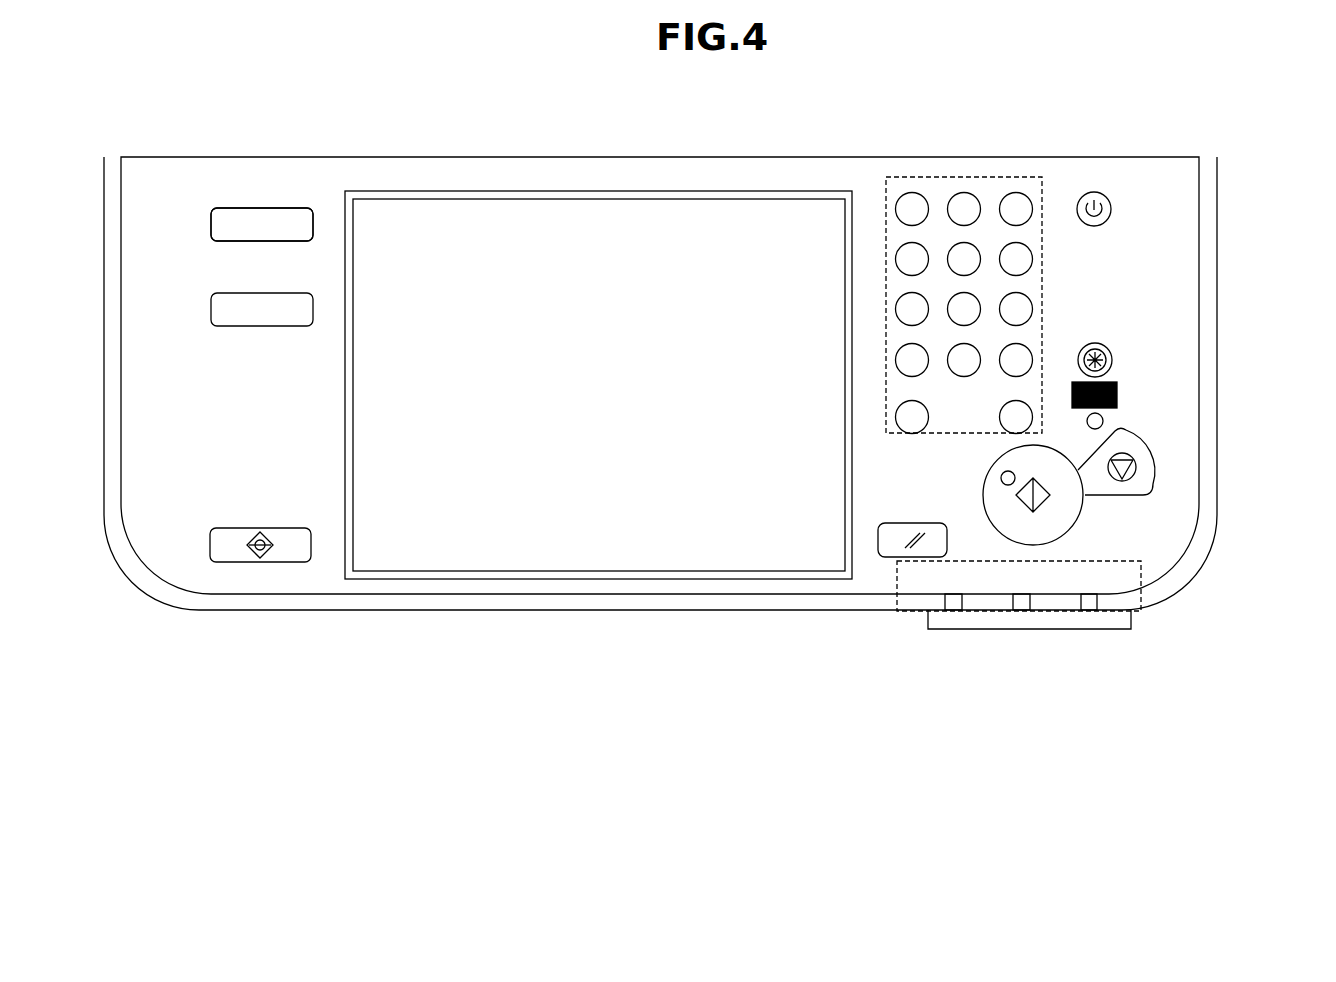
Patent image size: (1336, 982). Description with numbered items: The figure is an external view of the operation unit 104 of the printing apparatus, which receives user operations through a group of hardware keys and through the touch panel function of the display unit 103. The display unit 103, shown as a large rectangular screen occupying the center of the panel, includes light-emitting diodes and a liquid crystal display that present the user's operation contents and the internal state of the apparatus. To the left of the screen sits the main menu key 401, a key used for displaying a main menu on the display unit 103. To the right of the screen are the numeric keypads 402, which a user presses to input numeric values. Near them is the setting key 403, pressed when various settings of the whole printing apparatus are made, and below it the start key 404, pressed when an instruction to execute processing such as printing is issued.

The operation unit 104 is at (352, 611).
The main menu key 401 is at (209, 222).
The display unit 103 is at (694, 225).
The numeric keypads 402 is at (960, 177).
The setting key 403 is at (1112, 358).
The start key 404 is at (1078, 527).